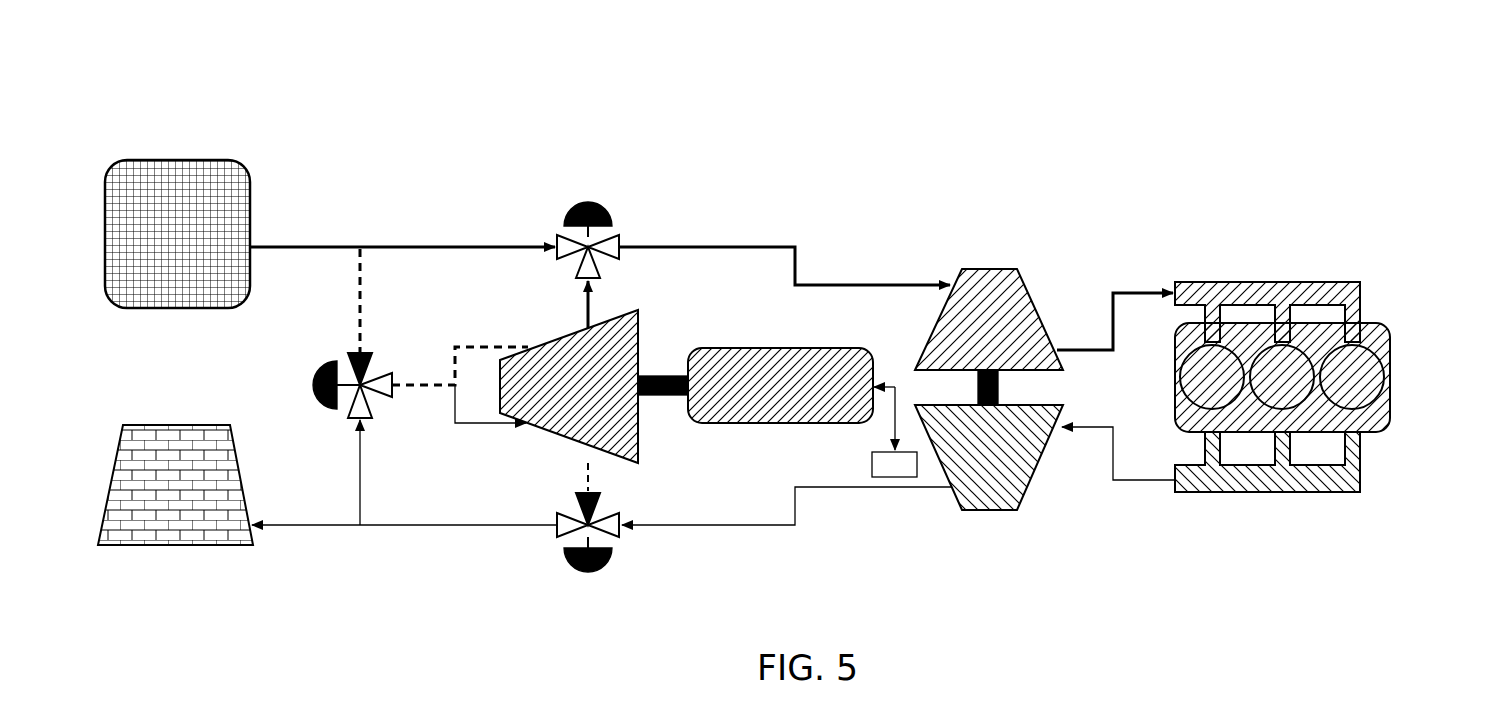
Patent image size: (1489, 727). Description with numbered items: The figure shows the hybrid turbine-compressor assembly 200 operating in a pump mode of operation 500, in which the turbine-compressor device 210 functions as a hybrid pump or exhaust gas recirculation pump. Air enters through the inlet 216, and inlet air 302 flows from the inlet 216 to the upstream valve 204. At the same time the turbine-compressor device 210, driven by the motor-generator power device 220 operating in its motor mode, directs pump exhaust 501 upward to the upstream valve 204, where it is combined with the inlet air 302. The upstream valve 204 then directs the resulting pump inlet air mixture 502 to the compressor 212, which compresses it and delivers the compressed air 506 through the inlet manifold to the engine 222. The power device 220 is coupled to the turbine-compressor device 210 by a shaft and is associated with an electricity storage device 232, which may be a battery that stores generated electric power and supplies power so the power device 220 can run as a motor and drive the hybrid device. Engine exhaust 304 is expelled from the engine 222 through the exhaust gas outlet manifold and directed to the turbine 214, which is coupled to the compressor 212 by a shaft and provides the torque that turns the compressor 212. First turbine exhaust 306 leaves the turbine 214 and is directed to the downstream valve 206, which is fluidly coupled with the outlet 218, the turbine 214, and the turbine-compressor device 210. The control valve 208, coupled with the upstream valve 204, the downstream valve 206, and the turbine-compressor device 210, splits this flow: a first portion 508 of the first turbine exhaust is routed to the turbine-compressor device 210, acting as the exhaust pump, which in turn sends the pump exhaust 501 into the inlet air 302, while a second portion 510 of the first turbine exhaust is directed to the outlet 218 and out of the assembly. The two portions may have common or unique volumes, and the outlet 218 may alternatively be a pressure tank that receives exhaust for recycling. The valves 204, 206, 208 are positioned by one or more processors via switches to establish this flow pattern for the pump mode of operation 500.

The pump mode of operation 500 is at (1209, 90).
The turbine-compressor assembly 200 is at (1239, 186).
The inlet 216 is at (176, 160).
The inlet air 302 is at (425, 247).
The upstream valve 204 is at (586, 198).
The pump inlet air mixture 502 is at (735, 247).
The pump exhaust 501 is at (583, 310).
The turbine-compressor device 210 is at (640, 346).
The motor-generator power device 220 is at (766, 348).
The electricity storage device 232 is at (894, 432).
The compressor 212 is at (994, 269).
The turbine 214 is at (994, 510).
The engine intake line 506 is at (1108, 298).
The engine 222 is at (1392, 376).
The engine exhaust 304 is at (1140, 480).
The first turbine exhaust 306 is at (705, 525).
The second portion of the first turbine exhaust 510 is at (298, 525).
The downstream valve 206 is at (586, 572).
The control valve 208 is at (313, 385).
The first portion of the first turbine exhaust 508 is at (418, 385).
The outlet 218 is at (177, 545).